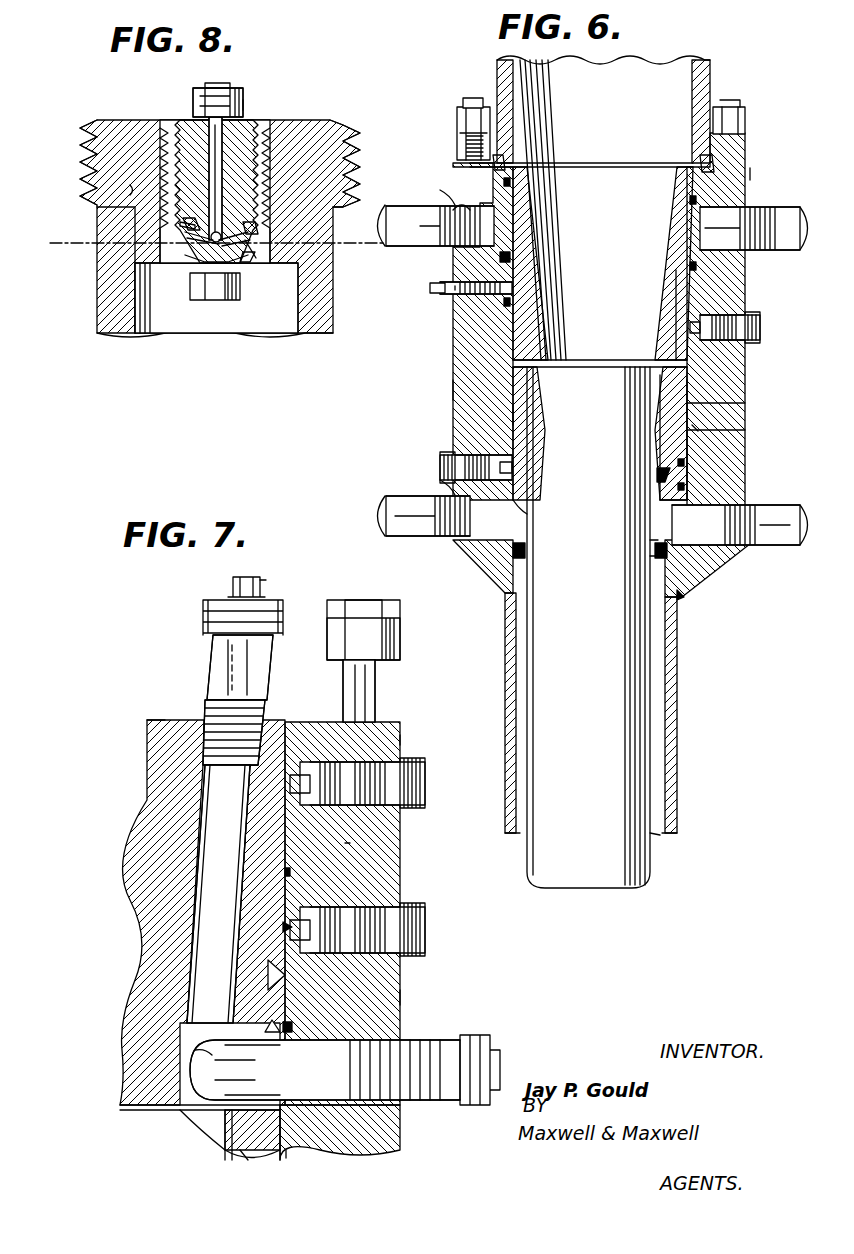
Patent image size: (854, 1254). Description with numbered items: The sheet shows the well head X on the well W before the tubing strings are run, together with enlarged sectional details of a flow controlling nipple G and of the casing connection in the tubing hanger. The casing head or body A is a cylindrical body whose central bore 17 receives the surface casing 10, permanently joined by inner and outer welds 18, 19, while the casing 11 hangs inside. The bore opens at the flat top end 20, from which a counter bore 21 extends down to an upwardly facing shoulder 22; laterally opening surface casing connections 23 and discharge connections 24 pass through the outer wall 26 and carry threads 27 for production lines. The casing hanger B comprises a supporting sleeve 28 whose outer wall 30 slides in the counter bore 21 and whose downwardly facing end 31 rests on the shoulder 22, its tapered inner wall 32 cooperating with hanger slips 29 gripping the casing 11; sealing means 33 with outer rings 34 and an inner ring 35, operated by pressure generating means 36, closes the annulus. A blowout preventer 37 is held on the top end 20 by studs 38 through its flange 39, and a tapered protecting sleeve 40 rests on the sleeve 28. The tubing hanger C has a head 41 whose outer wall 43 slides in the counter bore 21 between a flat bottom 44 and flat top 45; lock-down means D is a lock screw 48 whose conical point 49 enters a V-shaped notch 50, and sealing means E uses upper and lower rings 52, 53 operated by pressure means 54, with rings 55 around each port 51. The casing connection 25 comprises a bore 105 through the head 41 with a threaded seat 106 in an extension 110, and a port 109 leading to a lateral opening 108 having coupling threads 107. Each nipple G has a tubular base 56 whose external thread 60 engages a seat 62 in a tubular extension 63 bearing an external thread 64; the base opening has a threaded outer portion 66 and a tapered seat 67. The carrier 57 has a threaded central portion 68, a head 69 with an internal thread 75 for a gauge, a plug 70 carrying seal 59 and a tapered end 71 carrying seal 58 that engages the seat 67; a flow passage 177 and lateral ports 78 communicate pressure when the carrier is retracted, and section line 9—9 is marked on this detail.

In FIG. 6, the surface casing 10 is at (677, 752).
In FIG. 6, the casing 11 is at (645, 686).
In FIG. 7, the casing 11 is at (225, 1148).
In FIG. 6, the central bore 17 is at (652, 542).
In FIG. 6, the inner weld 18 is at (655, 556).
In FIG. 6, the outer weld 19 is at (680, 598).
In FIG. 6, the top end 20 is at (715, 165).
In FIG. 7, the top end 20 is at (388, 723).
In FIG. 6, the counter bore 21 is at (690, 433).
In FIG. 7, the counter bore 21 is at (345, 843).
In FIG. 6, the shoulder 22 is at (680, 500).
In FIG. 6, the surface casing connections 23 is at (420, 530).
In FIG. 6, the tubing or discharge connections 24 is at (414, 206).
In FIG. 7, the casing connection 25 is at (208, 688).
In FIG. 6, the cylindrical outer wall 26 is at (453, 330).
In FIG. 7, the cylindrical outer wall 26 is at (402, 822).
In FIG. 6, the threads 27 is at (455, 202).
In FIG. 6, the supporting sleeve 28 is at (512, 384).
In FIG. 7, the supporting sleeve 28 is at (280, 1158).
In FIG. 6, the hanger slips 29 is at (662, 397).
In FIG. 7, the hanger slips 29 is at (232, 1138).
In FIG. 6, the outer cylindrical wall 30 is at (690, 404).
In FIG. 7, the outer cylindrical wall 30 is at (275, 1122).
In FIG. 6, the downwardly facing end 31 is at (505, 510).
In FIG. 6, the tapered inner wall 32 is at (658, 417).
In FIG. 7, the tapered inner wall 32 is at (248, 1155).
In FIG. 6, the sealing means 33 is at (690, 462).
In FIG. 6, the outer rings 34 is at (690, 486).
In FIG. 6, the inner ring 35 is at (660, 474).
In FIG. 7, the inner ring 35 is at (273, 1033).
In FIG. 6, the fluid pressure generating means 36 is at (460, 455).
In FIG. 6, the blowout preventer 37 is at (497, 72).
In FIG. 6, the studs 38 is at (473, 98).
In FIG. 6, the flange 39 is at (457, 136).
In FIG. 6, the protecting sleeve 40 is at (700, 280).
In FIG. 7, the head 41 is at (145, 792).
In FIG. 7, the outer peripheral wall 43 is at (292, 730).
In FIG. 7, the flat bottom 44 is at (120, 1110).
In FIG. 7, the flat top 45 is at (160, 724).
In FIG. 6, the lock screw 48 is at (470, 282).
In FIG. 6, the conical point 49 is at (512, 300).
In FIG. 6, the V-shaped notch 50 is at (690, 310).
In FIG. 7, the V-shaped notch 50 is at (282, 975).
In FIG. 6, the ports 51 is at (505, 232).
In FIG. 6, the upper rings 52 is at (512, 181).
In FIG. 7, the upper rings 52 is at (292, 775).
In FIG. 6, the lower rings 53 is at (700, 264).
In FIG. 7, the lower rings 53 is at (282, 927).
In FIG. 6, the fluid pressure generating means 54 is at (725, 320).
In FIG. 7, the fluid pressure generating means 54 is at (390, 905).
In FIG. 6, the rings 55 is at (690, 200).
In FIG. 8, the tubular base 56 is at (137, 118).
In FIG. 8, the carrier 57 is at (252, 120).
In FIG. 8, the sealing means 58 is at (252, 258).
In FIG. 8, the sealing means 59 is at (250, 228).
In FIG. 8, the connection means 60 is at (325, 125).
In FIG. 8, the threaded seat 62 is at (130, 182).
In FIG. 8, the tubular extension 63 is at (105, 305).
In FIG. 8, the external thread 64 is at (77, 150).
In FIG. 8, the outer end portion 66 is at (200, 212).
In FIG. 8, the shoulder or seat 67 is at (256, 258).
In FIG. 8, the central portion 68 is at (168, 165).
In FIG. 8, the head 69 is at (222, 92).
In FIG. 8, the plug 70 is at (183, 228).
In FIG. 8, the tapered end 71 is at (215, 300).
In FIG. 8, the internal thread 75 is at (213, 86).
In FIG. 8, the lateral ports 78 is at (232, 232).
In FIG. 7, the bore 105 is at (205, 880).
In FIG. 7, the seat 106 is at (215, 722).
In FIG. 7, the coupling threads 107 is at (425, 1070).
In FIG. 7, the lateral opening 108 is at (325, 1070).
In FIG. 7, the port 109 is at (215, 1067).
In FIG. 7, the extension 110 is at (215, 662).
In FIG. 8, the flow passage 177 is at (209, 135).
In FIG. 6, the section line 9— 9 is at (396, 265).
In FIG. 8, the section line 9— 9 is at (57, 232).
In FIG. 6, the casing head or body A is at (450, 391).
In FIG. 7, the casing head or body A is at (402, 998).
In FIG. 6, the casing hanger B is at (505, 416).
In FIG. 7, the casing hanger B is at (290, 1152).
In FIG. 7, the tubing hanger C is at (290, 872).
In FIG. 6, the lock-down means D is at (432, 294).
In FIG. 6, the sealing means E is at (498, 257).
In FIG. 7, the sealing means E is at (292, 1028).
In FIG. 8, the flow controlling nipples G is at (258, 98).
In FIG. 7, the flow controlling nipples G is at (265, 582).
In FIG. 6, the well W is at (677, 832).
In FIG. 6, the well head X is at (757, 180).
In FIG. 7, the well head X is at (410, 738).